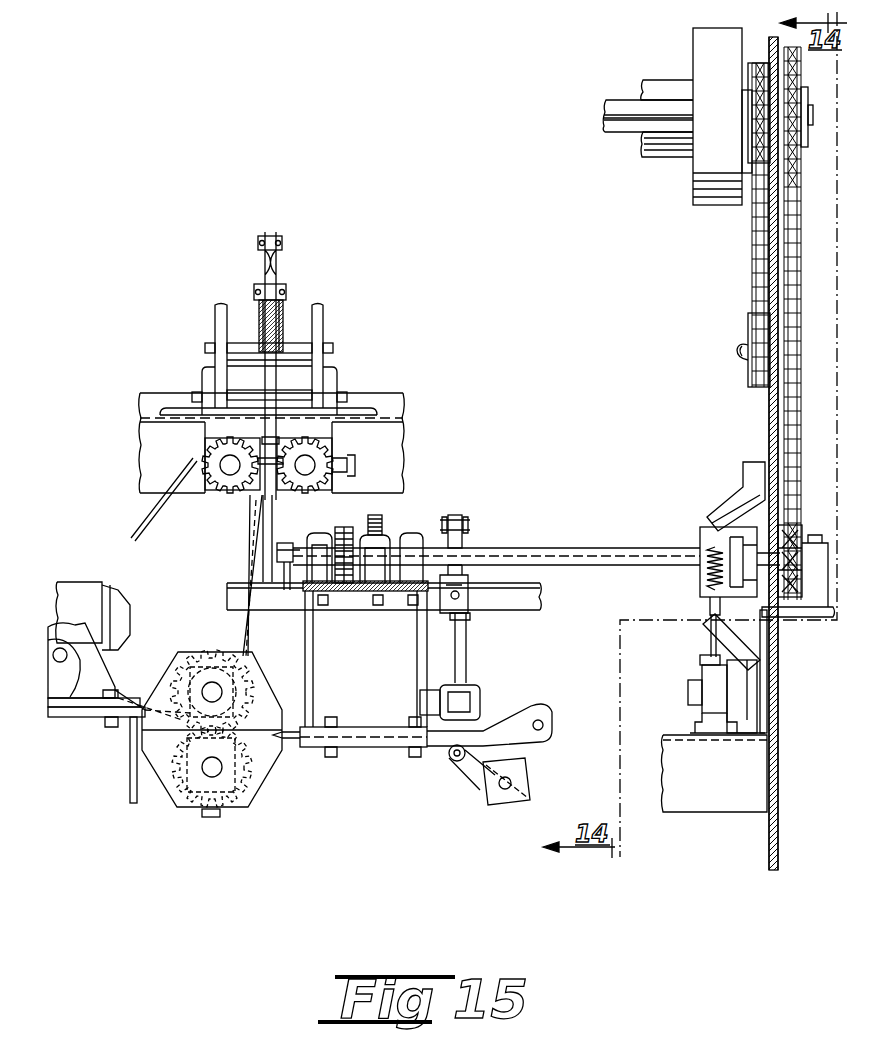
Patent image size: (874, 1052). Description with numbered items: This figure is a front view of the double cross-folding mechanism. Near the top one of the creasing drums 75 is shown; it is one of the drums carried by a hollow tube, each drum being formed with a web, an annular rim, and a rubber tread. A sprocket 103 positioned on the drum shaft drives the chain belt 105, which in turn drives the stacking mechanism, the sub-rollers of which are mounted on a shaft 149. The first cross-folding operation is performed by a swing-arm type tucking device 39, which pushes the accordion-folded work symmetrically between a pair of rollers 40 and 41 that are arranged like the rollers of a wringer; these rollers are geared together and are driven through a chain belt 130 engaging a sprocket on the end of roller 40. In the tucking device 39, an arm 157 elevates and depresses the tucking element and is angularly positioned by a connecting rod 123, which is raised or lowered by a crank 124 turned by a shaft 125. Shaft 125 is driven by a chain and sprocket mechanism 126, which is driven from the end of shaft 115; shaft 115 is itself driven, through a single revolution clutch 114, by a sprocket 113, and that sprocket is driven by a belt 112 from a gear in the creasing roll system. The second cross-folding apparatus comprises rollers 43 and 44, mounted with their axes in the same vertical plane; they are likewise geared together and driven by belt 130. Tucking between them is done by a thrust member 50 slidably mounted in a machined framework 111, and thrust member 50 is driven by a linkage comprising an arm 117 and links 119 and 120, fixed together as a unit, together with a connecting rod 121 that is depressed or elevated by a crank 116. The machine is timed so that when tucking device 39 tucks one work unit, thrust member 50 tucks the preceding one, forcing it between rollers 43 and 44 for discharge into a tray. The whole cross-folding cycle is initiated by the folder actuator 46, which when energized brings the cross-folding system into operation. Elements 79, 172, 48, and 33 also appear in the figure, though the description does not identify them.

The drum 75 is at (694, 52).
The shaft 79 is at (603, 117).
The sprocket 103 is at (746, 150).
The chain belt 105 is at (752, 272).
The chain 172 is at (804, 175).
The shaft 149 is at (743, 355).
The belt 112 is at (783, 430).
The sprocket 113 is at (797, 530).
The single revolution clutch 114 is at (697, 532).
The folder actuator 46 is at (693, 669).
The shaft 115 is at (500, 550).
The tucking device 39 is at (285, 262).
The arm 157 is at (268, 378).
The frame 48 is at (295, 342).
The beam 33 is at (178, 393).
The roller 40 is at (213, 498).
The roller 41 is at (312, 498).
The chain belt 130 is at (143, 517).
The connecting rod 123 is at (273, 520).
The crank 124 is at (278, 612).
The chain and sprocket mechanism 126 is at (342, 583).
The shaft 125 is at (388, 543).
The crank 116 is at (440, 547).
The connecting rod 121 is at (467, 648).
The framework 111 is at (338, 746).
The arm 117 is at (483, 733).
The link 119 is at (530, 770).
The link 120 is at (474, 773).
The thrust member 50 is at (283, 741).
The roller 43 is at (178, 657).
The roller 44 is at (177, 790).